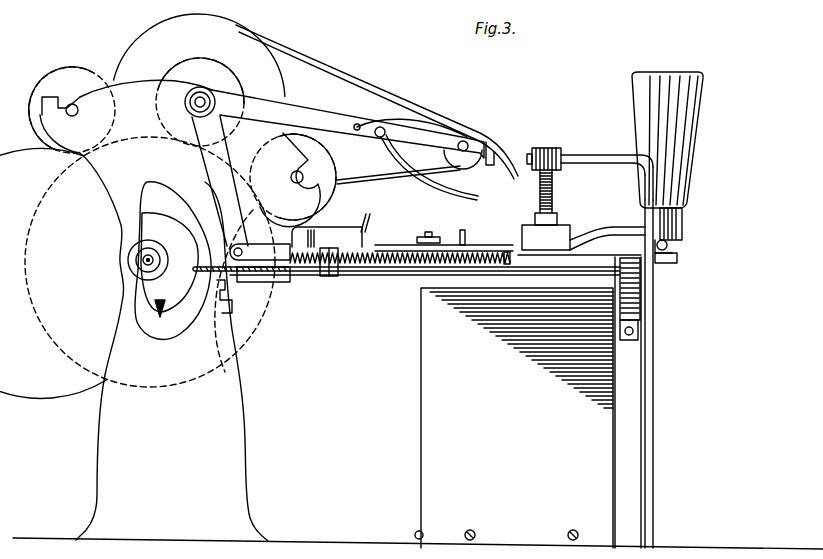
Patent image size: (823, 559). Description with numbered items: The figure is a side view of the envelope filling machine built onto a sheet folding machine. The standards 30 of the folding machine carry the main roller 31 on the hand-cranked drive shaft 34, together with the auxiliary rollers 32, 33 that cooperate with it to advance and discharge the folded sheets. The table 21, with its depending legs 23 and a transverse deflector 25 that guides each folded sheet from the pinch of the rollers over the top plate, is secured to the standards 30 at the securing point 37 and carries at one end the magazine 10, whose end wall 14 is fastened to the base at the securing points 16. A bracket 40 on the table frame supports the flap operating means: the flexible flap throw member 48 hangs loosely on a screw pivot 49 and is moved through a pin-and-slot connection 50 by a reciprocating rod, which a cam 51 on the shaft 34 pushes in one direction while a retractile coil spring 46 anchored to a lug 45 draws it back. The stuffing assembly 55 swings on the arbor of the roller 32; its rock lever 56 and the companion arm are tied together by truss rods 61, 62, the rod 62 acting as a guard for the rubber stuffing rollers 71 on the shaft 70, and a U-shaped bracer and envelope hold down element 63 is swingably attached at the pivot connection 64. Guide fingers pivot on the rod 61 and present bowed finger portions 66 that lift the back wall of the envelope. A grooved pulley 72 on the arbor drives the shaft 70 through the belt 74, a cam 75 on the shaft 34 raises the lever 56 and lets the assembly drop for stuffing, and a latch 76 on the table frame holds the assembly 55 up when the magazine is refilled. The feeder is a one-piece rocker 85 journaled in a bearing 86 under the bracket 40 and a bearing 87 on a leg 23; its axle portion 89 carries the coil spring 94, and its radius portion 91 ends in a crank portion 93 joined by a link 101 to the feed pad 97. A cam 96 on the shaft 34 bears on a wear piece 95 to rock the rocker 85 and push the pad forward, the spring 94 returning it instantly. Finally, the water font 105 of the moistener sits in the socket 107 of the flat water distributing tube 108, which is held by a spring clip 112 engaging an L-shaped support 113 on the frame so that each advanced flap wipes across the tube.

The magazine 10 is at (415, 435).
The end wall 14 is at (430, 481).
The securing points 16 is at (424, 533).
The table 21 is at (657, 362).
The legs 23 is at (630, 414).
The deflector 25 is at (270, 242).
The standards 30 is at (100, 462).
The main roller 31 is at (78, 366).
The auxiliary roller 32 is at (218, 86).
The auxiliary roller 33 is at (330, 190).
The drive shaft 34 is at (136, 259).
The securing point 37 is at (232, 306).
The bracket 40 is at (376, 249).
The lug 45 is at (291, 276).
The retractile coil spring 46 is at (452, 272).
The flexible flap throw member 48 is at (498, 244).
The screw pivot 49 is at (433, 233).
The pin-and-slot connection 50 is at (466, 235).
The cam 51 is at (157, 310).
The stuffing assembly 55 is at (305, 111).
The rock lever 56 is at (212, 156).
The truss rod 61 is at (378, 137).
The truss rod 62 is at (489, 158).
The bracer and envelope hold down element 63 is at (500, 152).
The pivot connection 64 is at (358, 124).
The bowed finger portion 66 is at (425, 180).
The shaft 70 is at (464, 140).
The stuffing rollers 71 is at (456, 168).
The grooved pulley 72 is at (138, 48).
The belt 74 is at (374, 92).
The cam 75 is at (195, 338).
The latch 76 is at (367, 226).
The rocker 85 is at (300, 275).
The bearing 86 is at (334, 277).
The bearing 87 is at (641, 311).
The axle portion 89 is at (448, 296).
The radius portion 91 is at (646, 188).
The crank portion 93 is at (596, 152).
The coil spring 94 is at (395, 274).
The wear piece 95 is at (205, 216).
The cam 96 is at (150, 290).
The feed pad 97 is at (530, 225).
The link 101 is at (549, 206).
The water font 105 is at (700, 121).
The socket 107 is at (683, 226).
The water distributing tube 108 is at (609, 223).
The spring clip 112 is at (674, 245).
The L-shaped support 113 is at (680, 258).